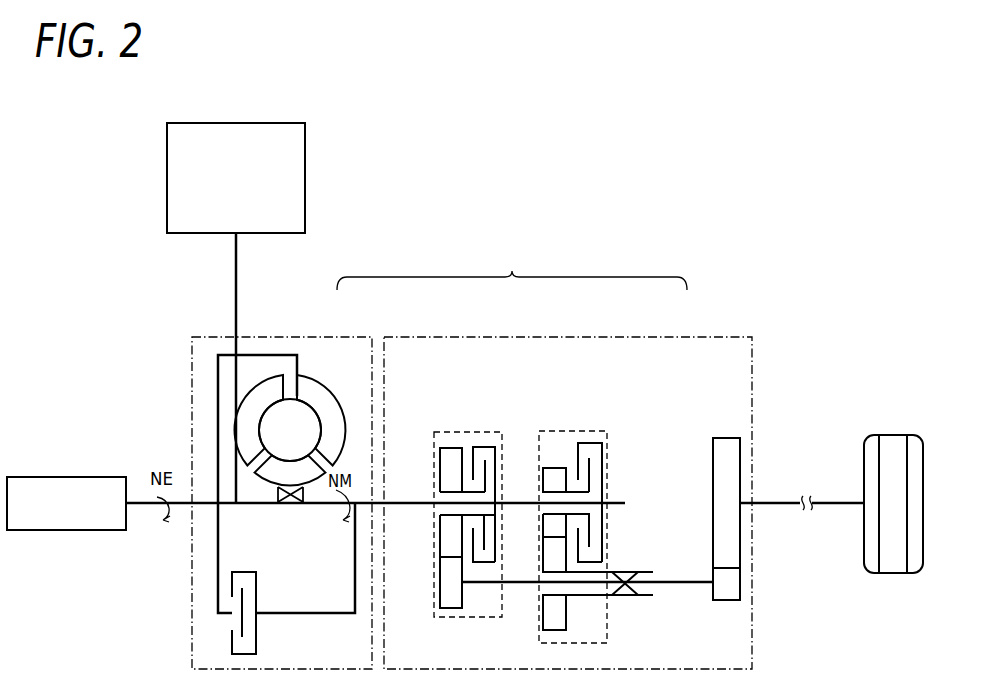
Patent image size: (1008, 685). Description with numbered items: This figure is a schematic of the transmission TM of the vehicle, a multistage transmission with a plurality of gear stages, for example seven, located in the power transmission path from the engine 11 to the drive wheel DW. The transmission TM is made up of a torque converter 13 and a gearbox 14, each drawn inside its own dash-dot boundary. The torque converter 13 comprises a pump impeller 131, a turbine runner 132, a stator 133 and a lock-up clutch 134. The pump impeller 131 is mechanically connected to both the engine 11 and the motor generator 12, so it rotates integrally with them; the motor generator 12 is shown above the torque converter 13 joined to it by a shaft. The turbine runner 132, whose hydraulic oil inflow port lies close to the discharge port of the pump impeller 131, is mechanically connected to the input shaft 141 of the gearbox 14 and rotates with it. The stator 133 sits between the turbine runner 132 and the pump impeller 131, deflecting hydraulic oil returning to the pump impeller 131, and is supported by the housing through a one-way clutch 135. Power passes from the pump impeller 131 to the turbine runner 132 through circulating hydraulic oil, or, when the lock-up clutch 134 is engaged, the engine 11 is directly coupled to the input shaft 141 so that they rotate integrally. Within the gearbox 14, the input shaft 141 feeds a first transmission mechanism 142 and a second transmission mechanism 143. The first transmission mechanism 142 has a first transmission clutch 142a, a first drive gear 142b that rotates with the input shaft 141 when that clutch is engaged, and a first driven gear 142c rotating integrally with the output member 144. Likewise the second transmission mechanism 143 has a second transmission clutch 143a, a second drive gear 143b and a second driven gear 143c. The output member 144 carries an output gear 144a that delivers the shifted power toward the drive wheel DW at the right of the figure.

The engine 11 is at (86, 476).
The motor generator 12 is at (267, 122).
The torque converter 13 is at (365, 336).
The gearbox 14 is at (678, 336).
The pump impeller 131 is at (322, 383).
The turbine runner 132 is at (243, 398).
The stator 133 is at (293, 455).
The lock-up clutch 134 is at (256, 646).
The one-way clutch 135 is at (277, 498).
The input shaft 141 is at (400, 502).
The first transmission mechanism 142 is at (607, 440).
The first transmission clutch 142a is at (591, 443).
The first drive gear 142b is at (553, 467).
The first driven gear 142c is at (539, 613).
The second transmission mechanism 143 is at (446, 431).
The second transmission clutch 143a is at (484, 446).
The second drive gear 143b is at (440, 543).
The second driven gear 143c is at (449, 611).
The output member 144 is at (657, 597).
The output gear 144a is at (720, 601).
The transmission TM is at (512, 268).
The drive wheel DW is at (898, 434).